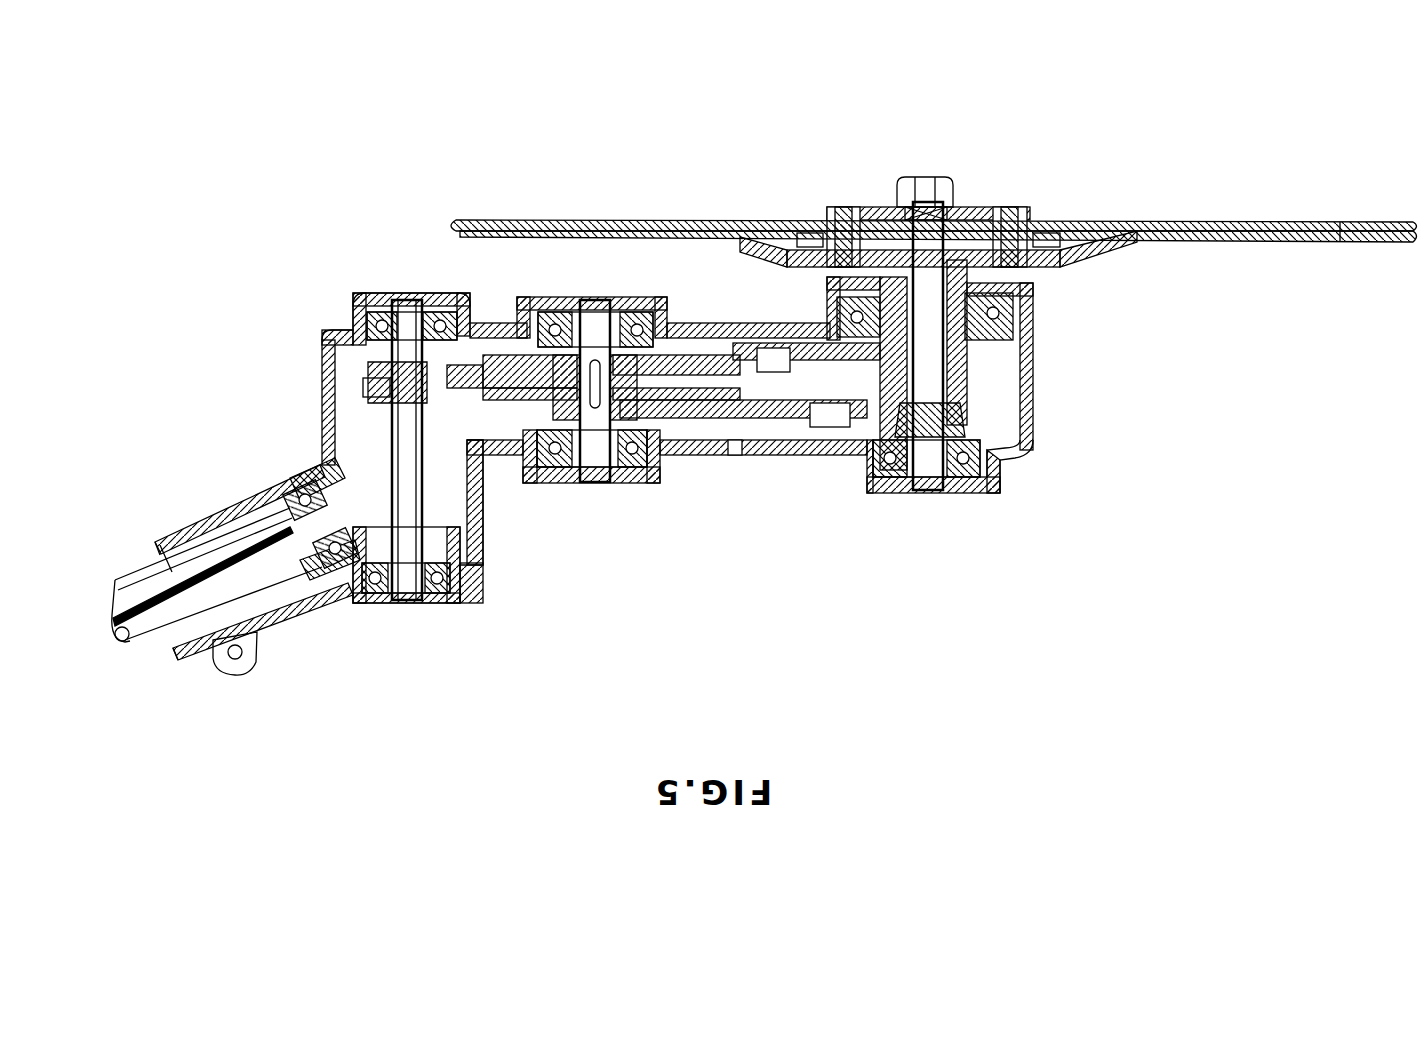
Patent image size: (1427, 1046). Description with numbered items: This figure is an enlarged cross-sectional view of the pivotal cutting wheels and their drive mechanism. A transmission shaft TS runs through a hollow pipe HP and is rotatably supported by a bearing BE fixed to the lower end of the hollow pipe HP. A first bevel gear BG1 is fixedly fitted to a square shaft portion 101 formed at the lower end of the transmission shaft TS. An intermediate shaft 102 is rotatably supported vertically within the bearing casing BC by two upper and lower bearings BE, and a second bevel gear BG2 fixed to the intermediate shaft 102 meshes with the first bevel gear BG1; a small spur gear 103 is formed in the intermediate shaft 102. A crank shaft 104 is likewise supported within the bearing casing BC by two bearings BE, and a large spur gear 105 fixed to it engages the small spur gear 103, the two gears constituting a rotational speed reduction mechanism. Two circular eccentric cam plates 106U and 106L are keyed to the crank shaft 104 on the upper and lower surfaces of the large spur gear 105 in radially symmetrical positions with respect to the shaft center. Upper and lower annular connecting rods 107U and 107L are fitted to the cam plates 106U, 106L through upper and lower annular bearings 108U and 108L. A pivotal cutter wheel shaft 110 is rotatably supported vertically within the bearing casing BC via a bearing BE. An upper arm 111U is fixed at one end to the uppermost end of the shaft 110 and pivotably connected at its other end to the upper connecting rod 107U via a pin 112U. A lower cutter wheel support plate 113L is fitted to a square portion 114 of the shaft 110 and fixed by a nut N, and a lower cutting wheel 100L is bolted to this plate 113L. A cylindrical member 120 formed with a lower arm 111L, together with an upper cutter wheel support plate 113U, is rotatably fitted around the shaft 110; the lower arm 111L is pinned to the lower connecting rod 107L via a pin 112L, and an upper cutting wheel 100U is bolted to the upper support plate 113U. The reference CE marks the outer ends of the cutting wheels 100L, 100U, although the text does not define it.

The lower cutting wheel 100L is at (1250, 224).
The upper cutting wheel 100U is at (1250, 240).
The square shaft portion 101 is at (232, 540).
The intermediate shaft 102 is at (410, 495).
The small spur gear 103 is at (366, 387).
The crank shaft 104 is at (595, 467).
The large spur gear 105 is at (407, 306).
The lower circular eccentric cam plate 106L is at (510, 326).
The upper circular eccentric cam plate 106U is at (630, 400).
The lower annular connecting rod 107L is at (720, 345).
The upper annular connecting rod 107U is at (770, 420).
The lower annular bearing 108L is at (670, 358).
The upper annular bearing 108U is at (705, 455).
The pivotal cutter wheel shaft 110 is at (927, 360).
The lower arm 111L is at (785, 325).
The upper arm 111U is at (865, 456).
The pin 112L is at (770, 350).
The pin 112U is at (830, 425).
The lower cutter wheel support plate 113L is at (995, 208).
The upper cutter wheel support plate 113U is at (1040, 265).
The square portion 114 is at (950, 214).
The cylindrical member 120 is at (992, 415).
The bearing casing BC is at (735, 454).
The bearing BE is at (370, 320).
The first bevel gear BG1 is at (375, 592).
The second bevel gear BG2 is at (470, 580).
The casing end CE is at (1386, 224).
The hollow pipe HP is at (126, 598).
The nut N is at (909, 173).
The transmission shaft TS is at (148, 628).